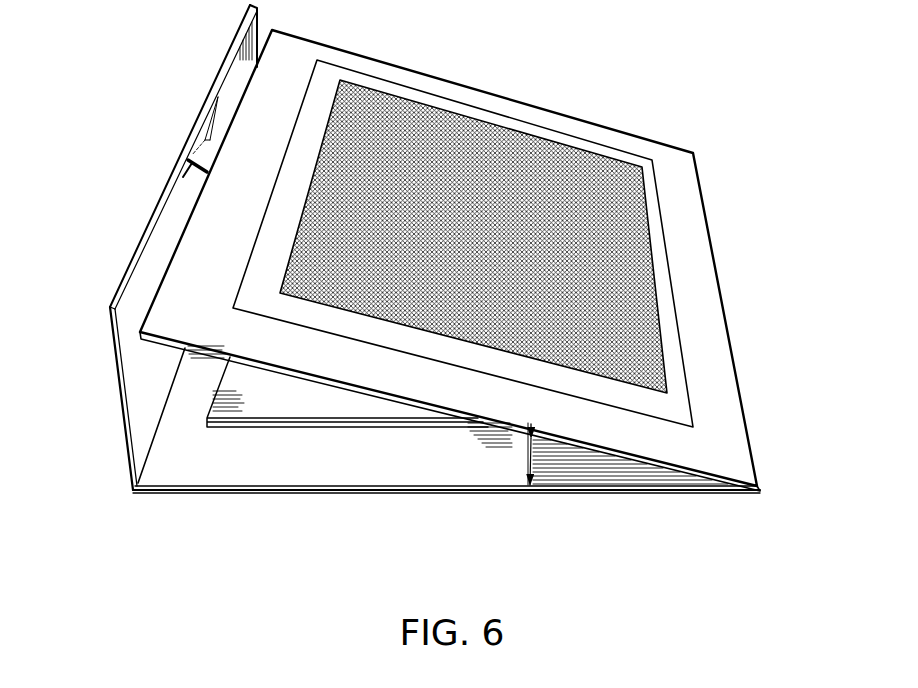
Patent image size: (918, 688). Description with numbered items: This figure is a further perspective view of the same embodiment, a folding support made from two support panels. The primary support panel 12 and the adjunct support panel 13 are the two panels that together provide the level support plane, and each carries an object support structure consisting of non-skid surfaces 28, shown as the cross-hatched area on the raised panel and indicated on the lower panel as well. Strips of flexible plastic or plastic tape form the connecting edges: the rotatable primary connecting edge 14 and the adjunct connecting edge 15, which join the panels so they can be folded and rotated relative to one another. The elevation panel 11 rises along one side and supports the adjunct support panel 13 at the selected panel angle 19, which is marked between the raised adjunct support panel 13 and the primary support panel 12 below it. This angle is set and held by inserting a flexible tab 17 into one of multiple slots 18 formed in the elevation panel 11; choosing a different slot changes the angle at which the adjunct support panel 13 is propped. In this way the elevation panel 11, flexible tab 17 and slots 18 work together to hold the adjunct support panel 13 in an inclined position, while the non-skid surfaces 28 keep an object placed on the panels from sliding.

The elevation panel 11 is at (108, 290).
The primary support panel 12 is at (348, 442).
The adjunct support panel 13 is at (455, 392).
The primary connecting edge 14 is at (150, 449).
The adjunct connecting edge 15 is at (730, 308).
The flexible tab 17 is at (208, 140).
The slots 18 is at (186, 163).
The selected panel angle 19 is at (532, 465).
The non-skid surfaces 28 is at (464, 239).